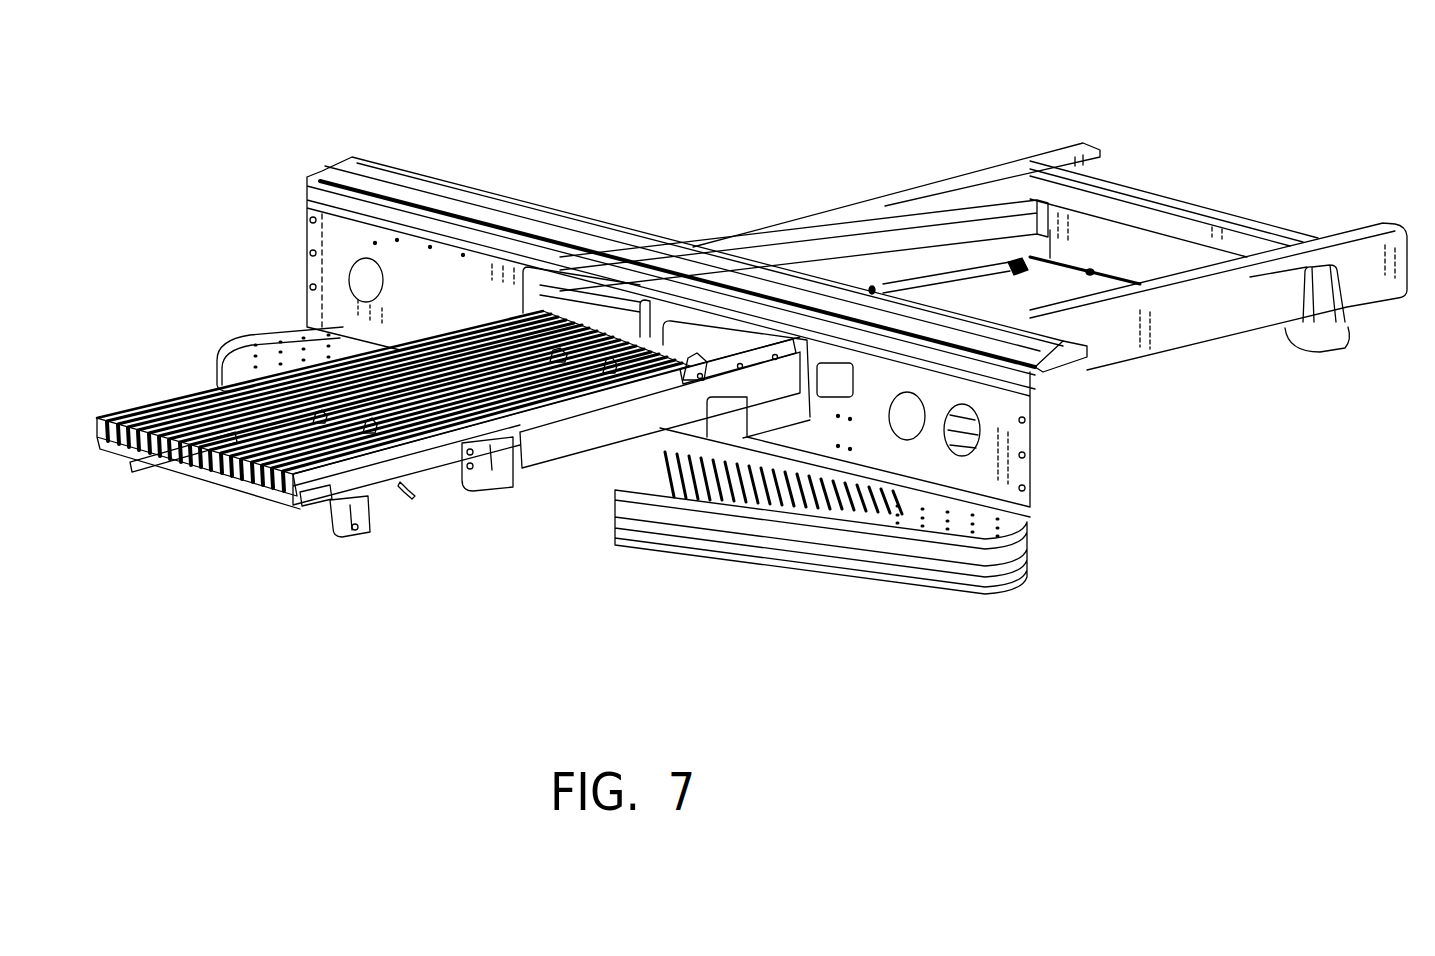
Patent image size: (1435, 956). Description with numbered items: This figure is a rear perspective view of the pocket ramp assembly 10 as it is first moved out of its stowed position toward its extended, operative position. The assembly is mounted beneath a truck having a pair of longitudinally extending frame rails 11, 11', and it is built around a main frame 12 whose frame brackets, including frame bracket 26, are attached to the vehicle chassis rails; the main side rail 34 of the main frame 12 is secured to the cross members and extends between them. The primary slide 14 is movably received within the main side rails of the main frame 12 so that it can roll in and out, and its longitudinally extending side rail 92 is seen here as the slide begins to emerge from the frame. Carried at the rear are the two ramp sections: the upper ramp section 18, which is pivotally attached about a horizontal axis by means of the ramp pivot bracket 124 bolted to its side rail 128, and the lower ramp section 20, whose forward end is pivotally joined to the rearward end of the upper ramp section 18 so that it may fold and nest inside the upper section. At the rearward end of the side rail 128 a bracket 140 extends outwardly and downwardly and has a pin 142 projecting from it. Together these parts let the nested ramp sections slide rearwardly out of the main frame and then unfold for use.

The pocket ramp assembly 10 is at (453, 470).
The frame rail 11 is at (917, 158).
The frame rail 11' is at (1218, 251).
The main side rail 34 is at (915, 252).
The main frame 12 is at (1028, 272).
The frame bracket 26 is at (1355, 322).
The primary slide 14 is at (613, 482).
The lower ramp section 20 is at (230, 478).
The upper ramp section 18 is at (417, 500).
The side rail 92 is at (537, 490).
The ramp pivot bracket 124 is at (487, 475).
The side rail 128 is at (448, 475).
The bracket 140 is at (335, 525).
The pin 142 is at (358, 533).